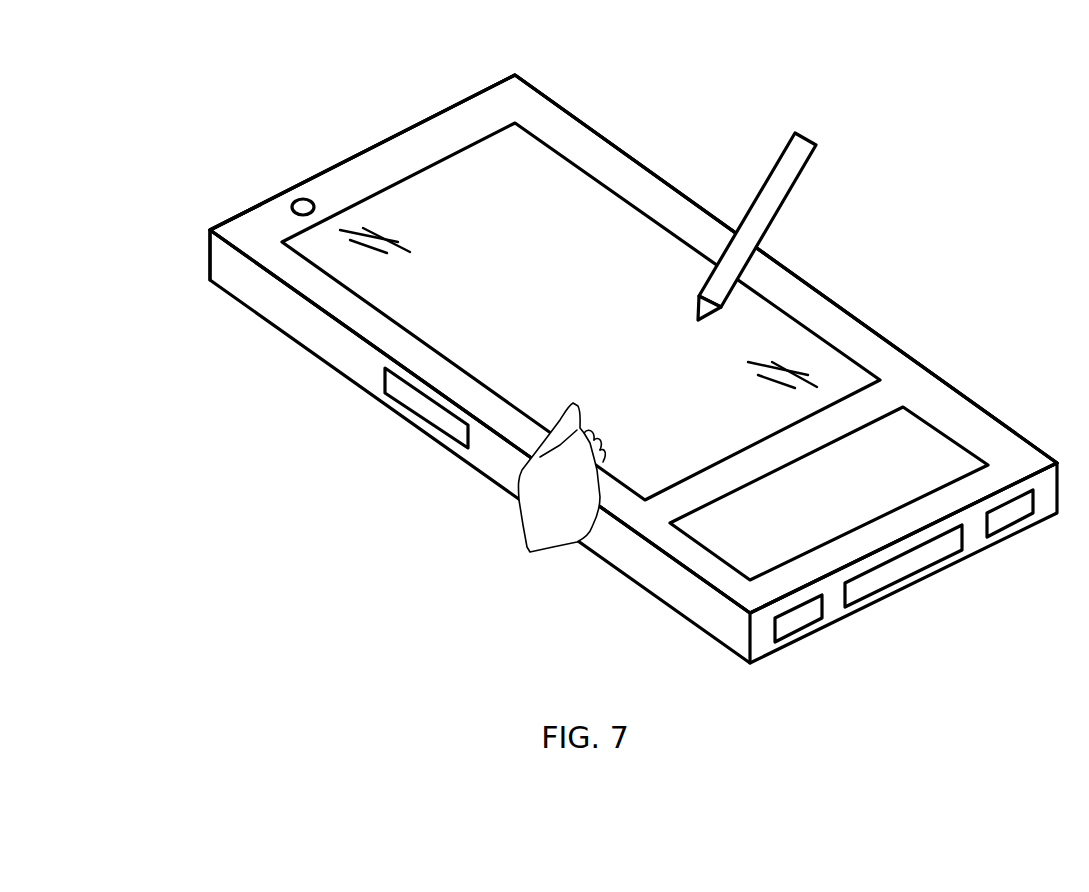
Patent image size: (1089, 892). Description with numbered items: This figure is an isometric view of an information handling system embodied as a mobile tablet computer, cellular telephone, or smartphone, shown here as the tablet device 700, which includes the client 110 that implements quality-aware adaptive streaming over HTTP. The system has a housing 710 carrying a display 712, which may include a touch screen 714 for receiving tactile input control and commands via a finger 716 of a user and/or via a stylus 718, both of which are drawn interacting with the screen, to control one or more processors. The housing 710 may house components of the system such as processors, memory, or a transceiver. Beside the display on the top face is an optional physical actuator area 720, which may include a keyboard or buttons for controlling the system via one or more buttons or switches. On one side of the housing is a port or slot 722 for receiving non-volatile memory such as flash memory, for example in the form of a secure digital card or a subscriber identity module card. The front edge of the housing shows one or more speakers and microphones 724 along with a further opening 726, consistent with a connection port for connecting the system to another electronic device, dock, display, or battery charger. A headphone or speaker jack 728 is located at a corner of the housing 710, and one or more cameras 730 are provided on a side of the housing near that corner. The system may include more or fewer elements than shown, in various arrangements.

The client 110 is at (649, 104).
The tablet device 700 is at (553, 95).
The housing 710 is at (457, 103).
The display 712 is at (490, 186).
The touch screen 714 is at (607, 313).
The finger 716 is at (572, 405).
The stylus 718 is at (773, 162).
The physical actuator area 720 is at (915, 453).
The port or slot 722 is at (400, 405).
The speakers and microphones 724 is at (800, 627).
The port 726 is at (918, 570).
The headphone or speaker jack 728 is at (235, 215).
The cameras 730 is at (298, 200).